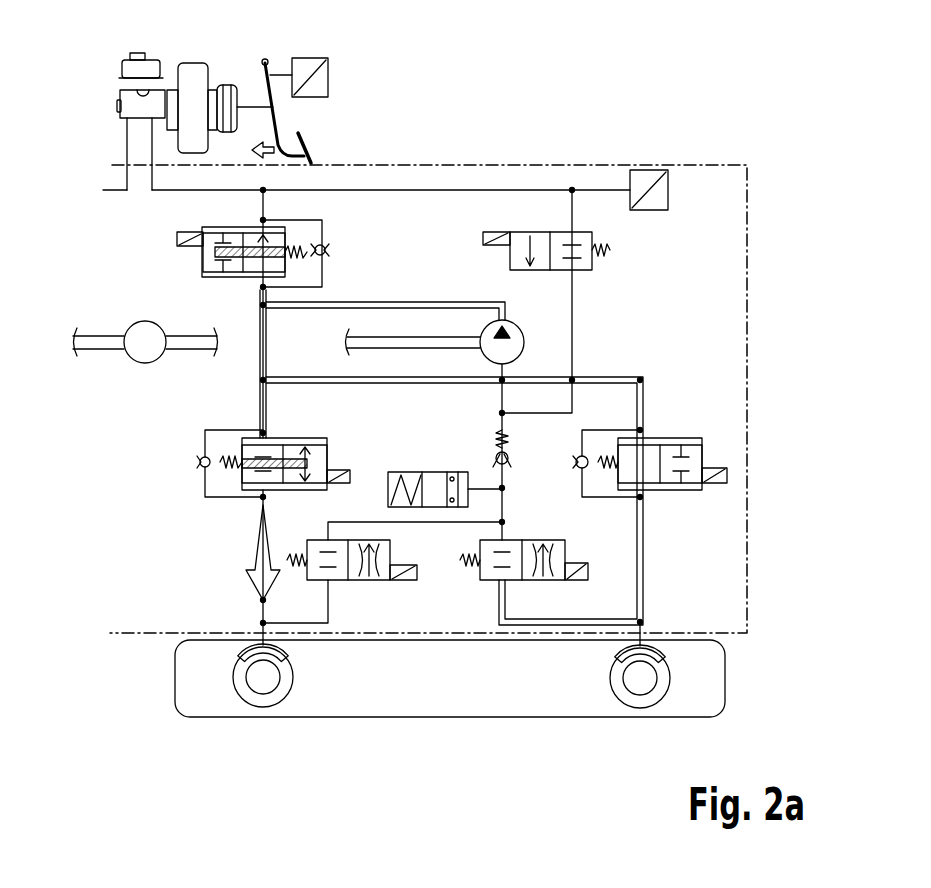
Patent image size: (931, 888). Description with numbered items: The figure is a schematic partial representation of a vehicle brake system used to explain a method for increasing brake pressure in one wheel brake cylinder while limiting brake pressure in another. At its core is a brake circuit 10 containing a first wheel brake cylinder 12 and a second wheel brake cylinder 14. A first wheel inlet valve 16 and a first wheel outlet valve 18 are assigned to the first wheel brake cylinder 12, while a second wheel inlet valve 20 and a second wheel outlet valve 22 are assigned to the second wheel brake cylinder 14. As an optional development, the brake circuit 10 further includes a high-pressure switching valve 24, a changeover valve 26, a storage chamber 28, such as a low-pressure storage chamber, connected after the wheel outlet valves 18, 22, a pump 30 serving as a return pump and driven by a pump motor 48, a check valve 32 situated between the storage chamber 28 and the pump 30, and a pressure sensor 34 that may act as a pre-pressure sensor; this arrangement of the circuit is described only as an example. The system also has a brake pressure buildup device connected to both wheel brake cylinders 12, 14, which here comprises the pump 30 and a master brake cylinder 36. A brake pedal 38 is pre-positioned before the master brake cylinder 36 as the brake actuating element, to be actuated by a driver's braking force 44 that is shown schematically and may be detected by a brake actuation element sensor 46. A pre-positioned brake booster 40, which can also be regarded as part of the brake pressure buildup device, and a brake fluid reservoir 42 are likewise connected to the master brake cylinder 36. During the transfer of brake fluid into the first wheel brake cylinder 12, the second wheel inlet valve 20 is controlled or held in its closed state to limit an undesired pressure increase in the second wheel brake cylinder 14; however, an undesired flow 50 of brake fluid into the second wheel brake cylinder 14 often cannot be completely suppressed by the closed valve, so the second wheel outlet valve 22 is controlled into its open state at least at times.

The brake circuit 10 is at (185, 560).
The first wheel brake cylinder 12 is at (622, 656).
The second wheel brake cylinder 14 is at (286, 660).
The first wheel inlet valve 16 is at (688, 438).
The first wheel outlet valve 18 is at (535, 538).
The second wheel inlet valve 20 is at (329, 447).
The second wheel outlet valve 22 is at (392, 545).
The high-pressure switching valve 24 is at (594, 235).
The changeover valve 26 is at (201, 258).
The storage chamber 28 is at (433, 471).
The pump 30 is at (525, 323).
The check valve 32 is at (508, 453).
The pressure sensor 34 is at (648, 168).
The master brake cylinder 36 is at (135, 108).
The brake pedal 38 is at (277, 113).
The brake booster 40 is at (193, 72).
The brake fluid reservoir 42 is at (137, 65).
The driver's braking force 44 is at (250, 158).
The brake actuation element sensor 46 is at (328, 65).
The pump motor 48 is at (145, 363).
The undesired flow 50 is at (252, 533).